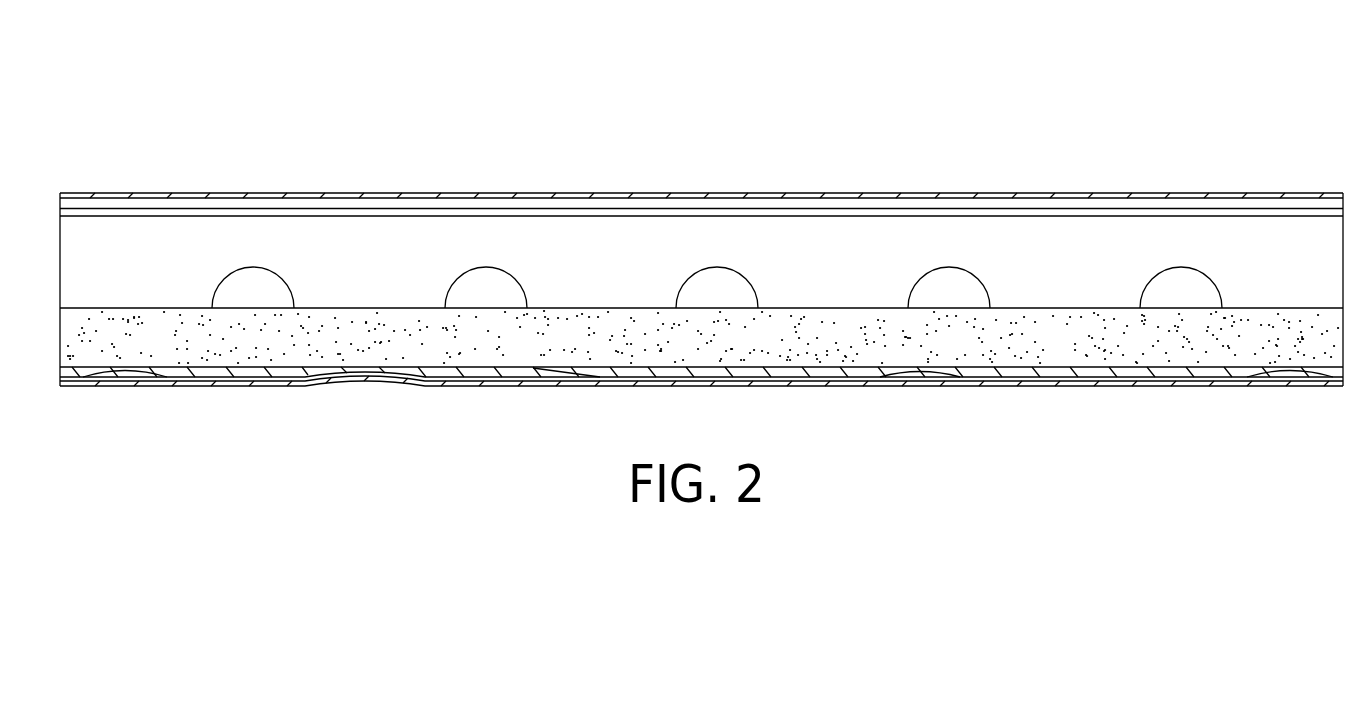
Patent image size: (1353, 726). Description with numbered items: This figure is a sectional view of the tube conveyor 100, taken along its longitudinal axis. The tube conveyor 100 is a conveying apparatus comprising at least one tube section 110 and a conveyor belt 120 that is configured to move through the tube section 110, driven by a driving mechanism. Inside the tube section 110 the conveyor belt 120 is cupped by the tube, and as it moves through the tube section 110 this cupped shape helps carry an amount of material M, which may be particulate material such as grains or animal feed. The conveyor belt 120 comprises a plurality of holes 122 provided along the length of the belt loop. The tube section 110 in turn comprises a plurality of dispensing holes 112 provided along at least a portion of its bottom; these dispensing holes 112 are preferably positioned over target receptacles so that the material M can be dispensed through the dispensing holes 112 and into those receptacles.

The tube conveyor 100 is at (1098, 101).
The tube section 110 is at (417, 194).
The conveyor belt 120 is at (683, 210).
The holes 122 is at (948, 288).
The material M is at (147, 316).
The dispensing holes 112 is at (356, 396).